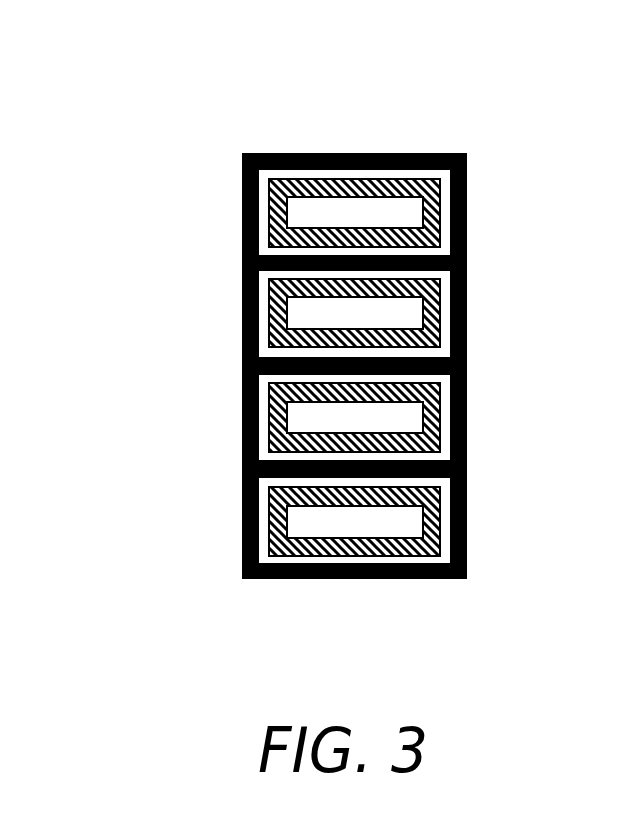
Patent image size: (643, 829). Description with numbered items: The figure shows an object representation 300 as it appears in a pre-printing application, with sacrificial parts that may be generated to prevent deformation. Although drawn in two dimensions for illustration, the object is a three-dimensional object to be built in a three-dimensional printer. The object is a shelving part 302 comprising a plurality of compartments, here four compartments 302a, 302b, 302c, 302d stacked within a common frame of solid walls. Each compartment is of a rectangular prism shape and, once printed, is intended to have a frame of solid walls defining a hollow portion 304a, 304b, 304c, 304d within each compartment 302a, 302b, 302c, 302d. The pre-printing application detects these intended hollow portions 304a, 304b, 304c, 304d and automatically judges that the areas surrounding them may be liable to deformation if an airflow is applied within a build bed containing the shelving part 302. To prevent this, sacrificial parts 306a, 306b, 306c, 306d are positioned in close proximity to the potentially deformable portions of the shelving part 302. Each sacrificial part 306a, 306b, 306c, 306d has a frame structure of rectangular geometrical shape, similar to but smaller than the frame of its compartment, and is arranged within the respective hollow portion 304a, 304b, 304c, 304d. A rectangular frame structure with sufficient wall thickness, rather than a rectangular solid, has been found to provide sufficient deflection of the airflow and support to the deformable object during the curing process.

The object representation 300 is at (226, 108).
The shelving part 302 is at (242, 167).
The compartment 302a is at (467, 177).
The compartment 302b is at (467, 284).
The compartment 302c is at (467, 397).
The compartment 302d is at (467, 497).
The hollow portion 304a is at (307, 217).
The hollow portion 304b is at (307, 312).
The hollow portion 304c is at (313, 419).
The hollow portion 304d is at (307, 520).
The sacrificial part 306a is at (435, 240).
The sacrificial part 306b is at (430, 330).
The sacrificial part 306c is at (440, 417).
The sacrificial part 306d is at (440, 518).